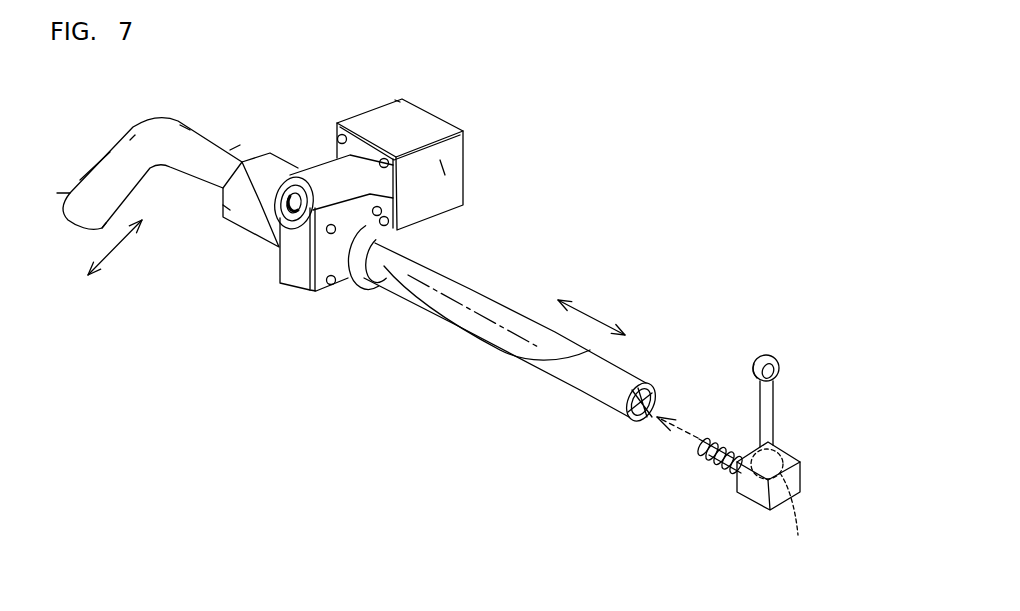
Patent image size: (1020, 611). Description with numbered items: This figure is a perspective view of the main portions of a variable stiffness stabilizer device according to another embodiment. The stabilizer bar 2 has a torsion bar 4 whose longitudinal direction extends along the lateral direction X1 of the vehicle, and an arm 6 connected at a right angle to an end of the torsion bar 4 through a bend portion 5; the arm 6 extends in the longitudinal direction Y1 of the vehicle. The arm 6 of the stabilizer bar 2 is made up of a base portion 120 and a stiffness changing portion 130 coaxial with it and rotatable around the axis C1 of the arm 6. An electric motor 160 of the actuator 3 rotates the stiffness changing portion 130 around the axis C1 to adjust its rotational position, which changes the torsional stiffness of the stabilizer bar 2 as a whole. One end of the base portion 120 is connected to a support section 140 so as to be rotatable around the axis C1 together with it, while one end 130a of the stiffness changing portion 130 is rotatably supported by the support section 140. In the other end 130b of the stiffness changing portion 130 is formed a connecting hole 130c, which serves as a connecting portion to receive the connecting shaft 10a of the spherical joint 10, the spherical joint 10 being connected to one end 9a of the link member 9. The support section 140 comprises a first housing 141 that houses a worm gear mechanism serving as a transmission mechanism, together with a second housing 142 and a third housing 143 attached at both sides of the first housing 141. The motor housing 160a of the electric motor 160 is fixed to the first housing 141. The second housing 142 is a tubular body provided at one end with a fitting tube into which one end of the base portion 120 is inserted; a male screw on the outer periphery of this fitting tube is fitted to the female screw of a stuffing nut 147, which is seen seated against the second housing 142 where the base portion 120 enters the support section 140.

The stabilizer bar 2 is at (240, 141).
The actuator 3 is at (385, 97).
The torsion bar 4 is at (105, 173).
The bend portion 5 is at (150, 135).
The arm 6 is at (193, 128).
The link member 9 is at (777, 403).
The one end of the link member 9a is at (783, 506).
The spherical joint 10 is at (754, 507).
The connecting shaft 10a is at (714, 462).
The base portion 120 is at (204, 152).
The stiffness changing portion 130 is at (502, 300).
The one end of the stiffness changing portion 130a is at (368, 268).
The other end of the stiffness changing portion 130b is at (619, 392).
The connecting hole 130c is at (641, 423).
The support section 140 is at (308, 288).
The first housing 141 is at (303, 262).
The second housing 142 is at (276, 230).
The third housing 143 is at (298, 264).
The stuffing nut 147 is at (248, 219).
The electric motor 160 is at (423, 130).
The motor housing 160a is at (443, 168).
The axis of the arm C1 is at (489, 322).
The lateral direction of the vehicle X1 is at (115, 248).
The longitudinal direction of the vehicle Y1 is at (588, 316).